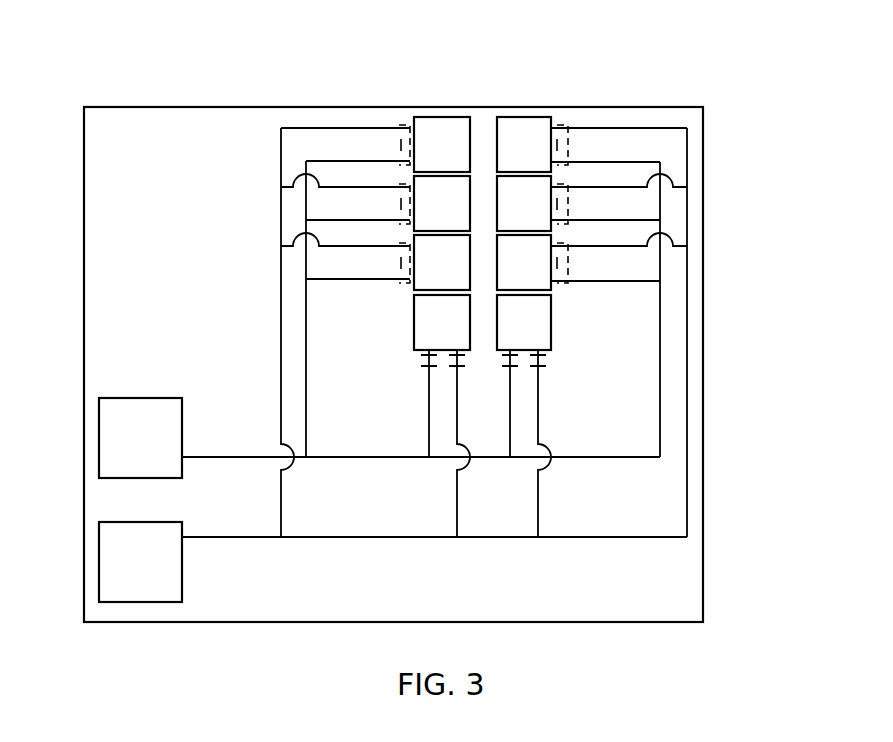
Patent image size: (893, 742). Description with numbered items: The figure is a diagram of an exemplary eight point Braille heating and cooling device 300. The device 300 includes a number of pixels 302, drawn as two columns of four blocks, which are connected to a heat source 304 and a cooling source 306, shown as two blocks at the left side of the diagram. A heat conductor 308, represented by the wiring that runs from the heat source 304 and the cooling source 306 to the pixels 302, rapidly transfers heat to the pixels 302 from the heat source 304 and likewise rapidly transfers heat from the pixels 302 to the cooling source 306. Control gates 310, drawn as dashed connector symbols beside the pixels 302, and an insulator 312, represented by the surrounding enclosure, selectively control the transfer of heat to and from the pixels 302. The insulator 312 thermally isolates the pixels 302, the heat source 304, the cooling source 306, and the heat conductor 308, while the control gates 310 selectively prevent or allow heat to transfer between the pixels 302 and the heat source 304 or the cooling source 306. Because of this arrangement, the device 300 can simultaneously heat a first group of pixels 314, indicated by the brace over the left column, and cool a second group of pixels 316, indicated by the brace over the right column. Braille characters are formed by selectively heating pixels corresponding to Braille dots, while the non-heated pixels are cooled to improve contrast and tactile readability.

The eight point Braille heating and cooling device 300 is at (96, 83).
The pixels 302 is at (461, 155).
The heat source 304 is at (160, 449).
The cooling source 306 is at (160, 573).
The heat conductor 308 is at (688, 510).
The control gates 310 is at (562, 127).
The insulator 312 is at (683, 606).
The first group of pixels 314 is at (470, 94).
The second group of pixels 316 is at (551, 94).